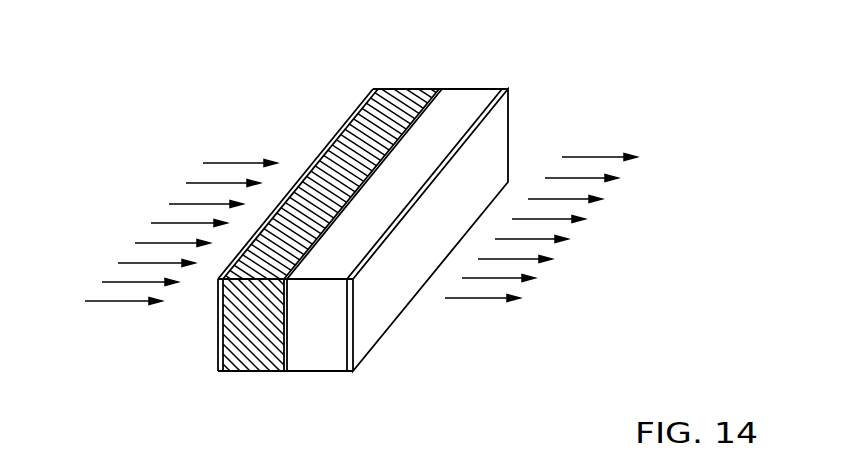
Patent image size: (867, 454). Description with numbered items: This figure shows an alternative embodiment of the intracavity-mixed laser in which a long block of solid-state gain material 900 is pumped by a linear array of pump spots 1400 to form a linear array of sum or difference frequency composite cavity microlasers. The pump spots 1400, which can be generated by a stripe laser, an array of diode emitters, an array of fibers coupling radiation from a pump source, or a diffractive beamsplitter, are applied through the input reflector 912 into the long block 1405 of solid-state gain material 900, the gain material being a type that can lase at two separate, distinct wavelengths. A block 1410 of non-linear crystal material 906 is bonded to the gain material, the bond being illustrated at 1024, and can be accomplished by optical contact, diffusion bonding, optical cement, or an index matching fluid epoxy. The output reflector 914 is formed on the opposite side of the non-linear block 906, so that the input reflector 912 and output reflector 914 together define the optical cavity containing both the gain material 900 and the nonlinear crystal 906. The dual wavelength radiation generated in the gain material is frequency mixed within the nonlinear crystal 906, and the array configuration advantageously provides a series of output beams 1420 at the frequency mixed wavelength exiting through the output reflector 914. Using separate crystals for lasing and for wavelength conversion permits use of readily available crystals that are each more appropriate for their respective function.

The solid-state gain material 900 is at (245, 370).
The nonlinear crystal 906 is at (340, 355).
The input reflector 912 is at (217, 343).
The output reflector 914 is at (367, 338).
The bond 1024 is at (322, 225).
The linear array of pump spots 1400 is at (208, 183).
The long block of solid-state gain material 1405 is at (407, 88).
The block of non-linear crystal material 1410 is at (482, 95).
The series of output beams 1420 is at (571, 263).